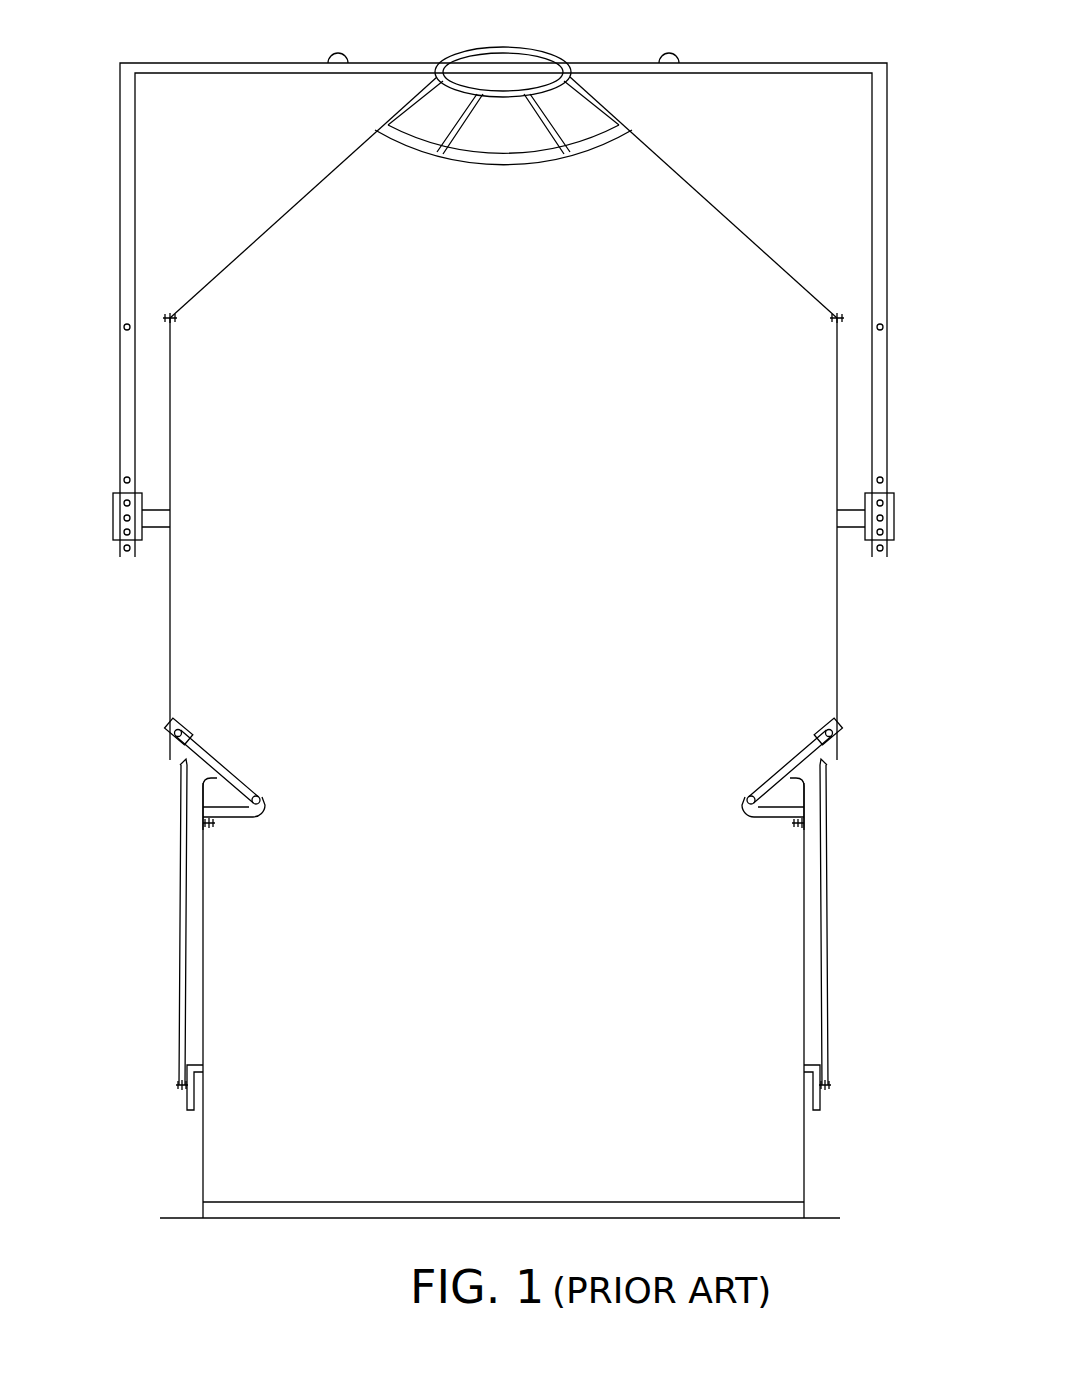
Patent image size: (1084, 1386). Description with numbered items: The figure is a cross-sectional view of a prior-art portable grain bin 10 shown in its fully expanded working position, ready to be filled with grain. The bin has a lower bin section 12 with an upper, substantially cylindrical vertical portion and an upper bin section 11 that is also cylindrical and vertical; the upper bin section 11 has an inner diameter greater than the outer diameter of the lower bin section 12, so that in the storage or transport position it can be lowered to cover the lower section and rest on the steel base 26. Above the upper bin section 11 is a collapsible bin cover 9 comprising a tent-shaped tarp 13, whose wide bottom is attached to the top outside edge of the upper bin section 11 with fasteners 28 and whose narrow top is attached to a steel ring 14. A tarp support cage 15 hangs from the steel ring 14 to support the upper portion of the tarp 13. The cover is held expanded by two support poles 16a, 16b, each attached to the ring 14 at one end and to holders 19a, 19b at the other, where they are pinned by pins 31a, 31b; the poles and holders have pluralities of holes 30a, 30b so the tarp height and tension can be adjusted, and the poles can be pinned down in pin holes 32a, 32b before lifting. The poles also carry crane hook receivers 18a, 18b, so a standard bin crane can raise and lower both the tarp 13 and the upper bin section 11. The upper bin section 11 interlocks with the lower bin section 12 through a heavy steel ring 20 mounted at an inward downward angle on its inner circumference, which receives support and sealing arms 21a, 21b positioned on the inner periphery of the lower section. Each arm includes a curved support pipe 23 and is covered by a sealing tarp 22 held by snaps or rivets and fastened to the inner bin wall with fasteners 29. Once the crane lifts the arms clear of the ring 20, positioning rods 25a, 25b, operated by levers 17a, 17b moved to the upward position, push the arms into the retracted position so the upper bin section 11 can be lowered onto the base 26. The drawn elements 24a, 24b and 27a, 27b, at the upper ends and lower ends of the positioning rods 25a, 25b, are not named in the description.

The collapsible bin cover 9 is at (270, 226).
The portable grain bin 10 is at (138, 647).
The upper bin section 11 is at (170, 597).
The lower bin section 12 is at (203, 1158).
The tent-shaped tarp 13 is at (737, 226).
The steel ring 14 is at (496, 48).
The tarp support cage 15 is at (456, 165).
The support pole 16a is at (205, 73).
The support pole 16b is at (802, 73).
The lever 17a is at (194, 1095).
The lever 17b is at (813, 1095).
The crane hook receiver 18a is at (340, 53).
The crane hook receiver 18b is at (667, 53).
The holder 19a is at (142, 497).
The holder 19b is at (865, 497).
The steel ring 20 is at (182, 720).
The support and sealing arm 21a is at (222, 770).
The support and sealing arm 21b is at (785, 770).
The sealing tarp 22 is at (262, 792).
The curved support pipe 23 is at (170, 736).
The left rod upper end 24a is at (183, 772).
The right rod upper end 24b is at (824, 772).
The positioning rod 25a is at (180, 913).
The positioning rod 25b is at (827, 913).
The steel base 26 is at (345, 1218).
The left rod lower latch 27a is at (177, 1086).
The right rod lower latch 27b is at (830, 1086).
The fasteners 28 is at (178, 318).
The fasteners 29 is at (214, 822).
The holes 30a is at (131, 548).
The holes 30b is at (876, 548).
The pin 31a is at (113, 517).
The pin 31b is at (894, 517).
The pin hole 32a is at (124, 327).
The pin hole 32b is at (883, 327).